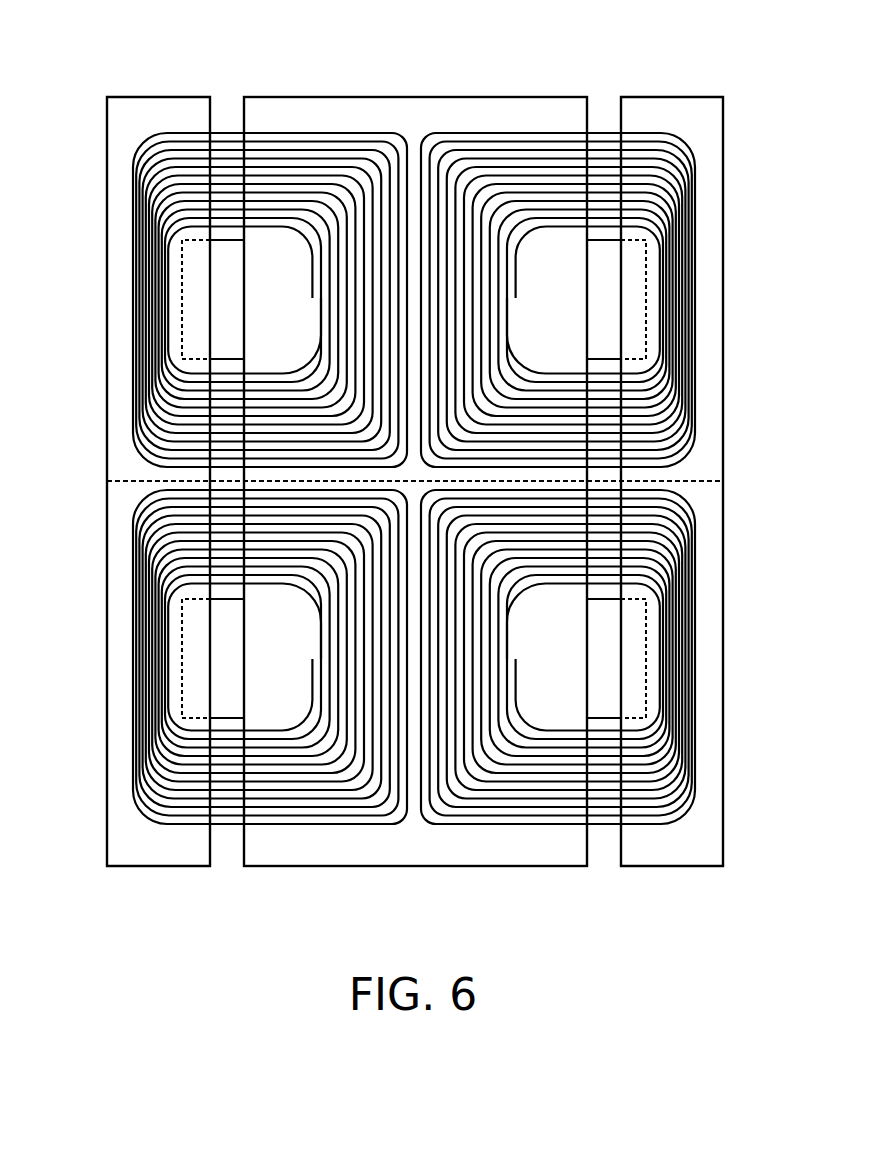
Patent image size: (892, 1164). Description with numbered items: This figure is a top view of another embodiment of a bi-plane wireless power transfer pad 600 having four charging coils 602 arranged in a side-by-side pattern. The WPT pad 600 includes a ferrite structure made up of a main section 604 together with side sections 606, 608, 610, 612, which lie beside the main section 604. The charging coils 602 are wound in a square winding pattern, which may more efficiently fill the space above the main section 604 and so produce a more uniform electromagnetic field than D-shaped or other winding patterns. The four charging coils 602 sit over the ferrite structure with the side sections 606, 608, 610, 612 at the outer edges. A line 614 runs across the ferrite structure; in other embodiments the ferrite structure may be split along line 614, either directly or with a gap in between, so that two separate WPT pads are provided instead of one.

The bi-plane wireless power transfer pad 600 is at (105, 50).
The charging coils 602 is at (450, 135).
The main section 604 is at (552, 866).
The side section 606 is at (147, 867).
The side section 608 is at (705, 866).
The side section 610 is at (162, 97).
The side section 612 is at (683, 97).
The line 614 is at (700, 481).